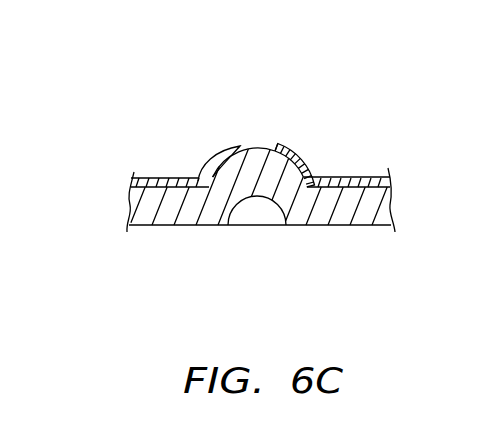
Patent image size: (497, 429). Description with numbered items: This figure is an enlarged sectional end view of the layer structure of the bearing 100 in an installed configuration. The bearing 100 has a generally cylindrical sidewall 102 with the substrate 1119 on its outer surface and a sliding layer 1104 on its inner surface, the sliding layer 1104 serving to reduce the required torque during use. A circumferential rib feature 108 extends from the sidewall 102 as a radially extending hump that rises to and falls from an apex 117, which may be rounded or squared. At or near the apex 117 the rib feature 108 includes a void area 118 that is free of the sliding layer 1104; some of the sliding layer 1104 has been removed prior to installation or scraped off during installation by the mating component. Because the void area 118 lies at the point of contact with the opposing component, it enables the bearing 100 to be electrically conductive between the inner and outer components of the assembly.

The bearing 100 is at (334, 83).
The generally cylindrical sidewall 102 is at (395, 218).
The circumferential rib feature 108 is at (281, 135).
The apex 117 is at (247, 145).
The void area 118 is at (257, 138).
The sliding layer 1104 is at (133, 177).
The substrate 1119 is at (134, 216).